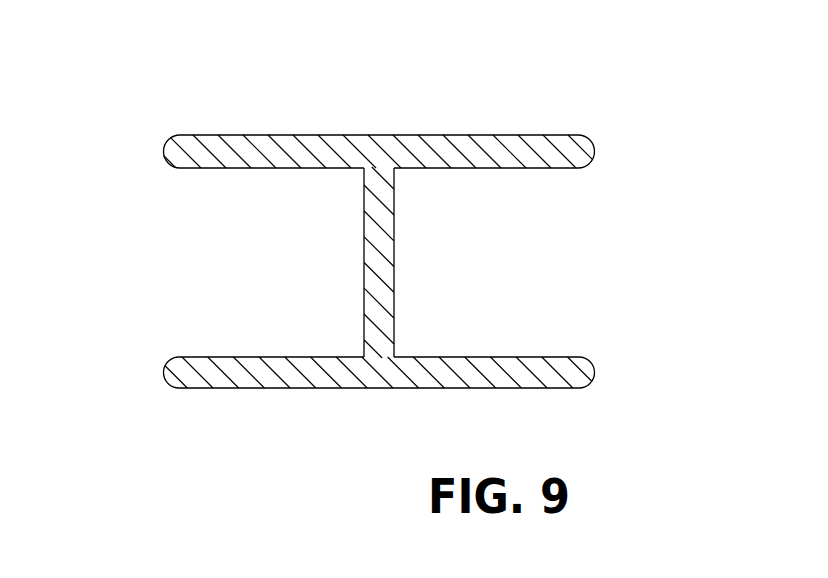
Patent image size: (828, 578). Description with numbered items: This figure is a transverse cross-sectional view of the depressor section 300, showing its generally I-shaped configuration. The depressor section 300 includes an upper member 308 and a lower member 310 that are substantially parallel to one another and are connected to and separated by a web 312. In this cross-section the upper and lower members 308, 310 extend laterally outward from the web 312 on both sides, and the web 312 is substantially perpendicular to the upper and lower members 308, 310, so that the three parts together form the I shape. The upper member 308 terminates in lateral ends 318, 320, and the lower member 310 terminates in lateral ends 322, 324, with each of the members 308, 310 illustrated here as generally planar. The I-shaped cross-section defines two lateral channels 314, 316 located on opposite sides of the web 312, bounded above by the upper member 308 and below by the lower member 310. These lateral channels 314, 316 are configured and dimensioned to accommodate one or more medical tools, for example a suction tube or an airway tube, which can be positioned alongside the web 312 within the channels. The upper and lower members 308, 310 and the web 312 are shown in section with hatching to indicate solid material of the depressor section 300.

The depressor section 300 is at (373, 238).
The upper member 308 is at (265, 138).
The lower member 310 is at (308, 376).
The web 312 is at (395, 205).
The lateral channel 314 is at (225, 246).
The lateral channel 316 is at (557, 280).
The lateral end of upper member 318 is at (163, 145).
The lateral end of upper member 320 is at (590, 137).
The lateral end of lower member 322 is at (163, 375).
The lateral end of lower member 324 is at (595, 375).